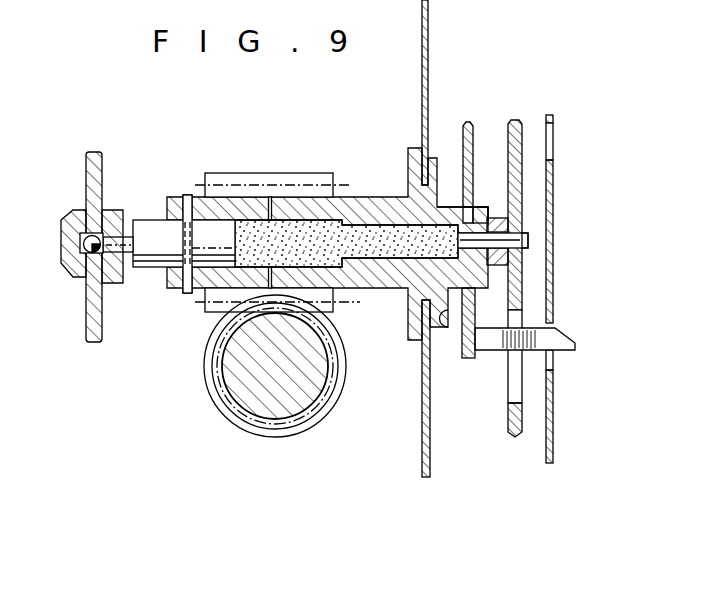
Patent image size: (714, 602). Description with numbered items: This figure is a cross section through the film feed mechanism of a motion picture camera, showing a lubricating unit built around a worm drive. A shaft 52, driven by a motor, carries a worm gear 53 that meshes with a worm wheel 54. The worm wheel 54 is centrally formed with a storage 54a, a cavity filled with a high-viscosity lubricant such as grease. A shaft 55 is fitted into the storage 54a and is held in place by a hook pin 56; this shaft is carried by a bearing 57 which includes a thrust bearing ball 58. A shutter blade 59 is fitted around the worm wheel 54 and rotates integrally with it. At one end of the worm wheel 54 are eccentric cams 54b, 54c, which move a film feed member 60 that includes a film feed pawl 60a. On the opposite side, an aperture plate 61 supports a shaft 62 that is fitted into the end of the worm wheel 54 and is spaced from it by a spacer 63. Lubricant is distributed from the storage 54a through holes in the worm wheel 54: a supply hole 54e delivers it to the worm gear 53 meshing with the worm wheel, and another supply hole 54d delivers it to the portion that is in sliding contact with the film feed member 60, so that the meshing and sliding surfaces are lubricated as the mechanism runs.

The shaft 52 is at (264, 368).
The worm gear 53 is at (217, 375).
The worm wheel 54 is at (215, 308).
The storage 54a is at (317, 240).
The eccentric cam 54b is at (474, 125).
The eccentric cam 54c is at (450, 320).
The supply hole 54d is at (453, 205).
The supply hole 54e is at (270, 197).
The shaft 55 is at (153, 257).
The hook pin 56 is at (188, 195).
The hand wheel 57 is at (103, 176).
The thrust bearing ball 58 is at (86, 226).
The shutter blade 59 is at (428, 45).
The film feed member 60 is at (483, 207).
The film feed pawl 60a is at (560, 336).
The aperture plate 61 is at (520, 126).
The shaft 62 is at (524, 242).
The spacer 63 is at (500, 222).